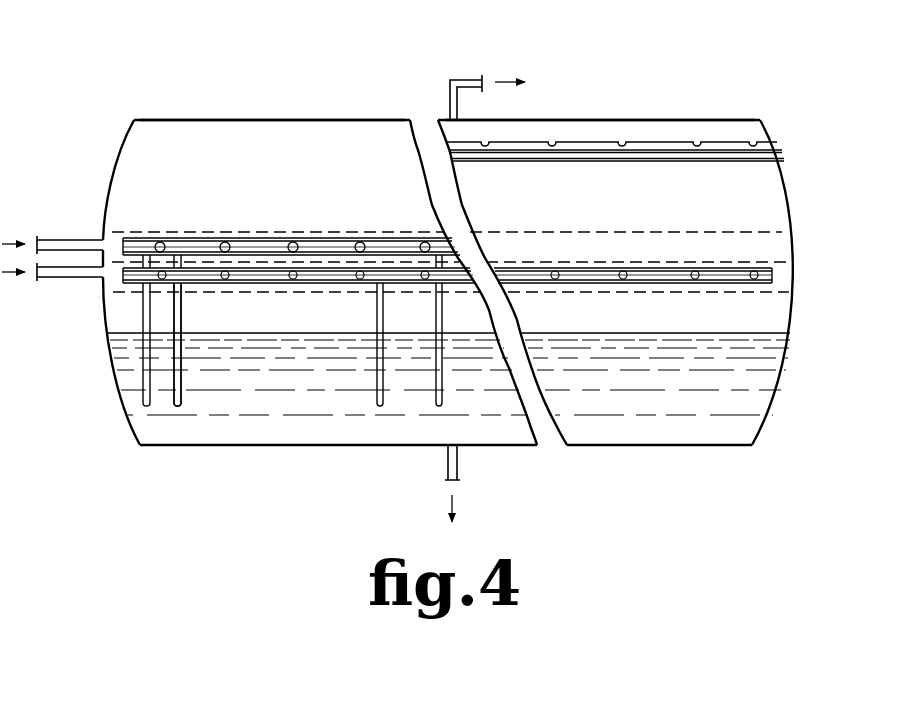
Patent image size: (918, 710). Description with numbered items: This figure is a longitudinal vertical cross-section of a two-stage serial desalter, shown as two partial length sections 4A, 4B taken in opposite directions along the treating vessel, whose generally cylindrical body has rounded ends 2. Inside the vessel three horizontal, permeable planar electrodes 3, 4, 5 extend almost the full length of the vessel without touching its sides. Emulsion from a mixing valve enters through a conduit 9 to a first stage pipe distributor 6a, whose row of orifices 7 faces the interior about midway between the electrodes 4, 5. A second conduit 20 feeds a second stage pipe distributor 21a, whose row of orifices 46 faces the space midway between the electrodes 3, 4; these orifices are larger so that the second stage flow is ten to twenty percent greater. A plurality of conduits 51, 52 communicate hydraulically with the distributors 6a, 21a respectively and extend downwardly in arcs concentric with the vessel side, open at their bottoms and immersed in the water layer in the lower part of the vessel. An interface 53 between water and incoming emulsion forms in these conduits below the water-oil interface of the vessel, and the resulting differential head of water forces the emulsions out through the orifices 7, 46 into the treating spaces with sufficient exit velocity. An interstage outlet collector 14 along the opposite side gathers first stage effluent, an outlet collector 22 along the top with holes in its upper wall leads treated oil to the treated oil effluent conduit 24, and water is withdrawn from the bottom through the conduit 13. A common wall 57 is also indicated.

The rounded ends 2 is at (785, 185).
The electrode 3 is at (590, 230).
The electrode 4 is at (590, 262).
The partial length section 4A is at (268, 116).
The partial length section 4B is at (613, 116).
The electrode 5 is at (590, 293).
The pipe distributor 6a is at (133, 284).
The orifices 7 is at (293, 284).
The conduit 9 is at (57, 279).
The conduit 13 is at (458, 466).
The interstage outlet collector 14 is at (665, 285).
The conduit 20 is at (57, 239).
The pipe distributor 21a is at (143, 237).
The outlet collector 22 is at (662, 160).
The treated oil effluent conduit 24 is at (467, 80).
The orifices 46 is at (225, 240).
The conduits 51 is at (182, 402).
The conduits 52 is at (444, 398).
The interface 53 is at (180, 386).
The common wall 57 is at (376, 398).